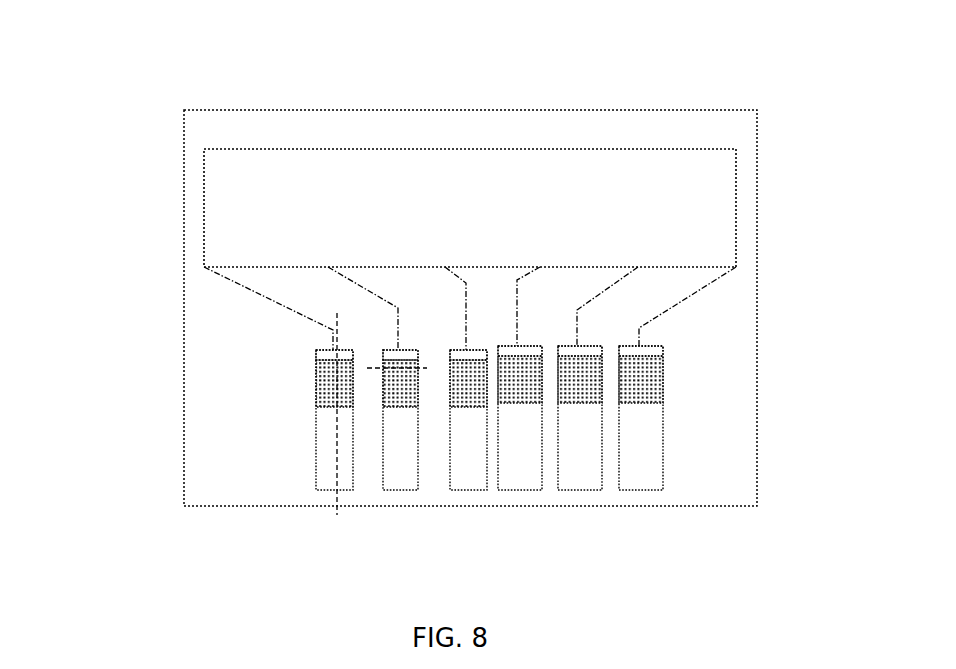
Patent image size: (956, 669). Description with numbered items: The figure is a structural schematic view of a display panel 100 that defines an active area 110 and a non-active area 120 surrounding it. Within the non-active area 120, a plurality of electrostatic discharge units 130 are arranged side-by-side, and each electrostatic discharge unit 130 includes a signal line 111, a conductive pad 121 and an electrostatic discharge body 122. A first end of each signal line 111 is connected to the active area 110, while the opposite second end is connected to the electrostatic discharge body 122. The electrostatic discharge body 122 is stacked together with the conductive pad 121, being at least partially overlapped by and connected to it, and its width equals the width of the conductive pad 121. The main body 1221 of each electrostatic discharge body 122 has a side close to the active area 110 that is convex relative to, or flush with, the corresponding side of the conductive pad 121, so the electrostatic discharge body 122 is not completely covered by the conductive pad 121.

The display panel 100 is at (437, 63).
The active area 110 is at (230, 172).
The non-active area 120 is at (720, 123).
The signal line 111 is at (265, 298).
The conductive pad 121 is at (340, 468).
The electrostatic discharge body 122 is at (317, 373).
The main body 1221 is at (650, 349).
The electrostatic discharge unit 130 is at (108, 363).